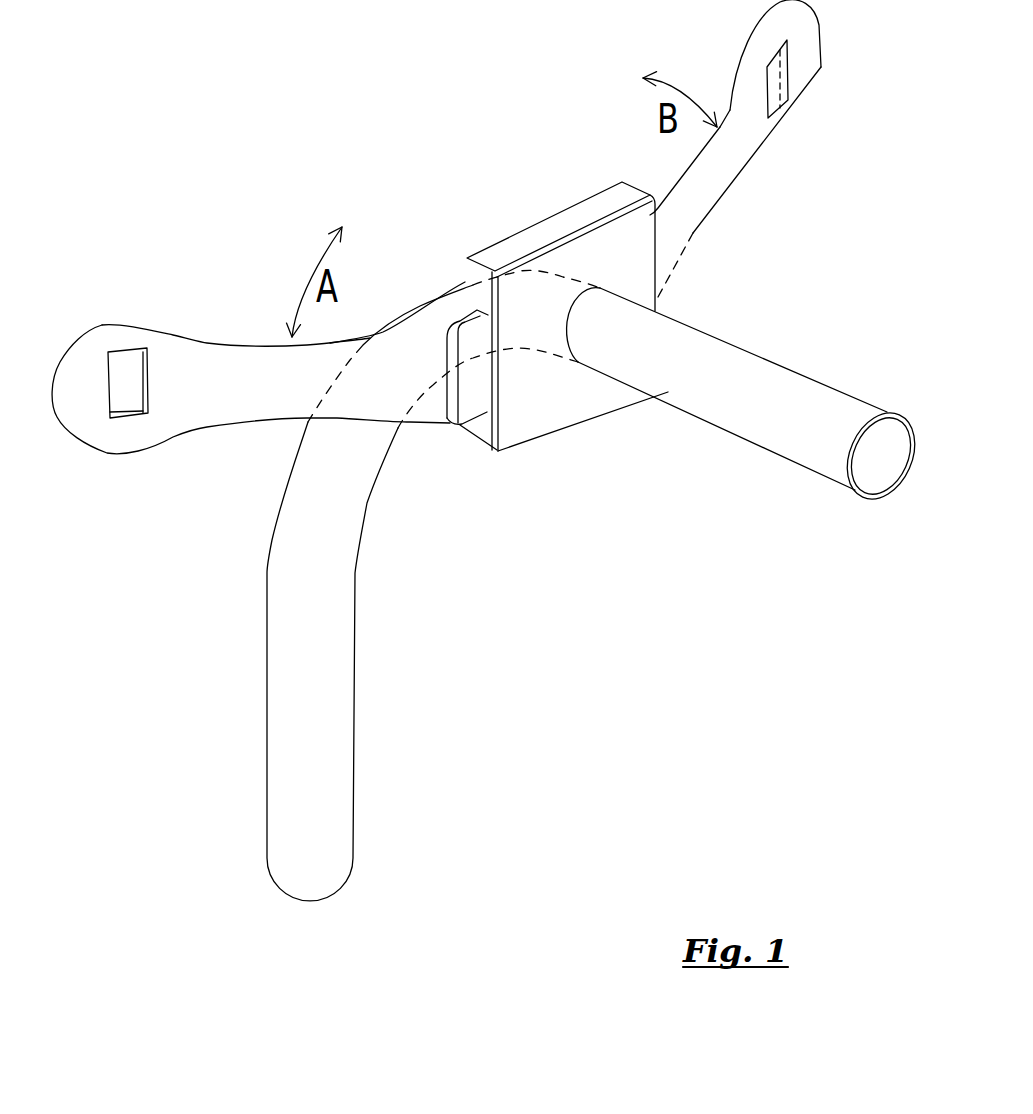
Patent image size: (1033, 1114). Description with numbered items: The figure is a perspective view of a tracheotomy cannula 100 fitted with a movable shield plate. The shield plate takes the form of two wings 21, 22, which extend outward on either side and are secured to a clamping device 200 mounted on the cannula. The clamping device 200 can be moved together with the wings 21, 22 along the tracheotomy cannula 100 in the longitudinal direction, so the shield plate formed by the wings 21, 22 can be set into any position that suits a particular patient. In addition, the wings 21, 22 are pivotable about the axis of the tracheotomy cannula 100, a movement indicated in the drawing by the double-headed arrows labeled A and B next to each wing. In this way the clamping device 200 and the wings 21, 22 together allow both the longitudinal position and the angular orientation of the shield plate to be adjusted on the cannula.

The wing 21 is at (217, 357).
The wing 22 is at (740, 117).
The tracheotomy cannula 100 is at (338, 665).
The clamping device 200 is at (542, 440).